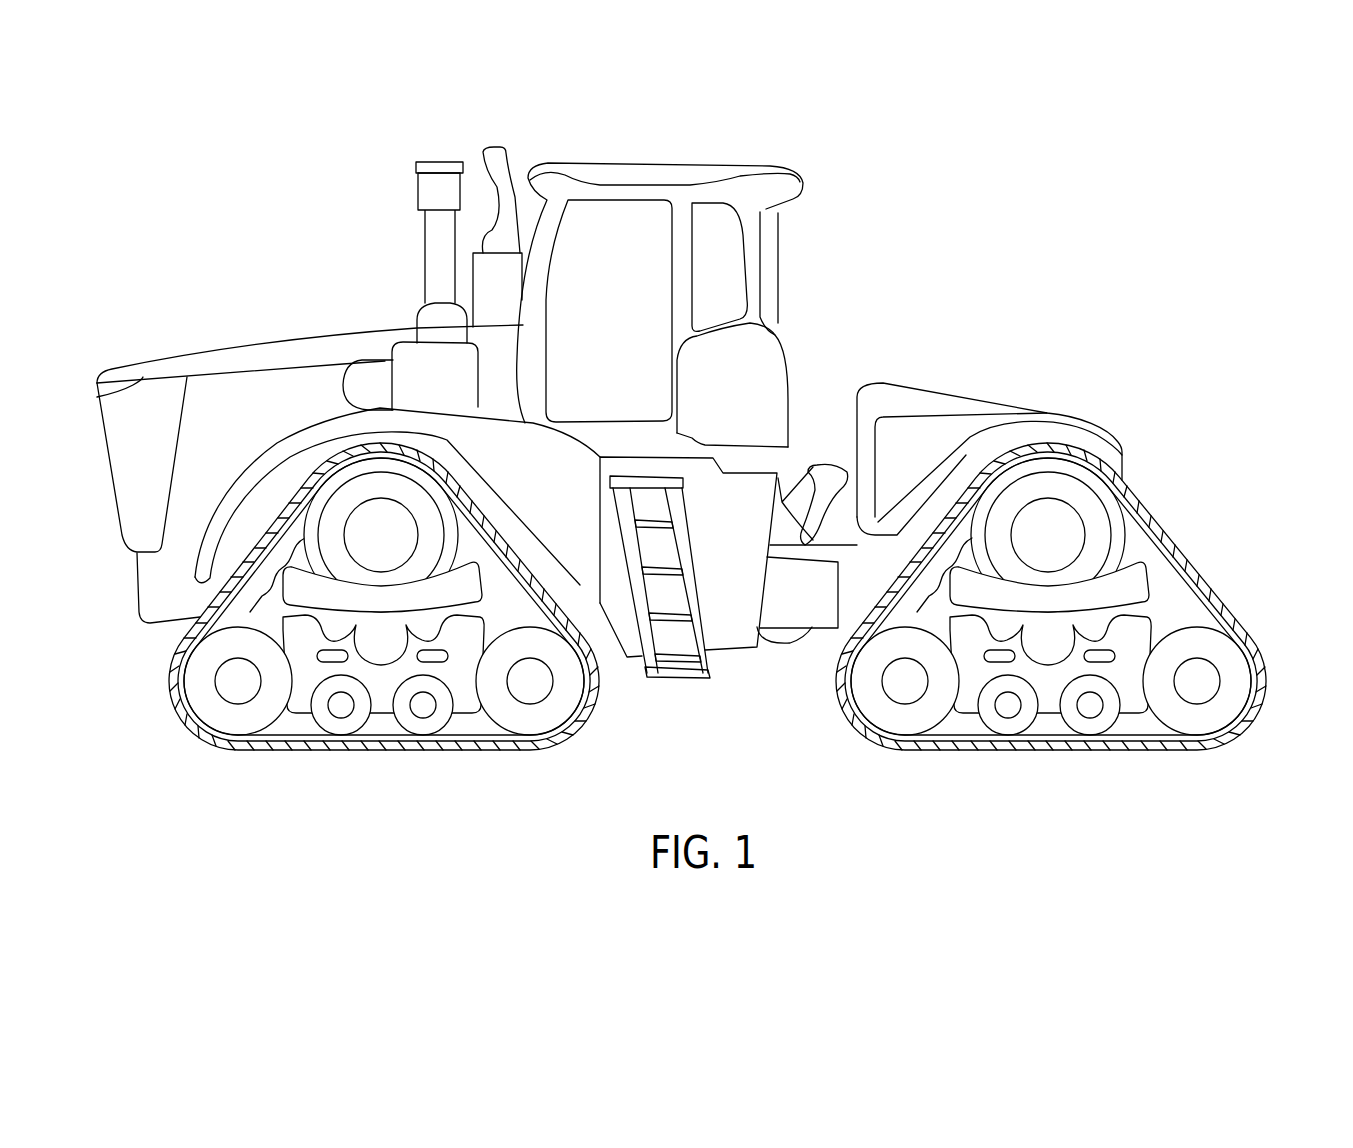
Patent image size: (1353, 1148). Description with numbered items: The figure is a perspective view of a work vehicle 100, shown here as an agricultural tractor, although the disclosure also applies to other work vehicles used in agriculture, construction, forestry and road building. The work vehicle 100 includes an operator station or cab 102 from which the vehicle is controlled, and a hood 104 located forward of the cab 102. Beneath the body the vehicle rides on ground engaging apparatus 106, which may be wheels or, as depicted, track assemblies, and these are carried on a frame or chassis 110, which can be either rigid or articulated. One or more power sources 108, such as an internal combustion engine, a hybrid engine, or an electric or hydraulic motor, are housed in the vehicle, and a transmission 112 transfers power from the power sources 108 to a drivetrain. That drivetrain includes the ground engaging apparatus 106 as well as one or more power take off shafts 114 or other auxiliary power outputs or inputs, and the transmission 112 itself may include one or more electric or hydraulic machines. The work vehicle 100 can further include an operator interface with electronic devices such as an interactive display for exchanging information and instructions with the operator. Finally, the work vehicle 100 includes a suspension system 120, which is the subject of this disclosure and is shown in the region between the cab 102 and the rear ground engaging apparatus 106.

The work vehicle 100 is at (905, 166).
The cab 102 is at (638, 168).
The hood 104 is at (178, 350).
The ground engaging apparatus 106 is at (175, 710).
The power source 108 is at (268, 395).
The frame 110 is at (752, 595).
The transmission 112 is at (625, 678).
The power take off (PTO) shaft 114 is at (1192, 417).
The suspension system 120 is at (825, 375).